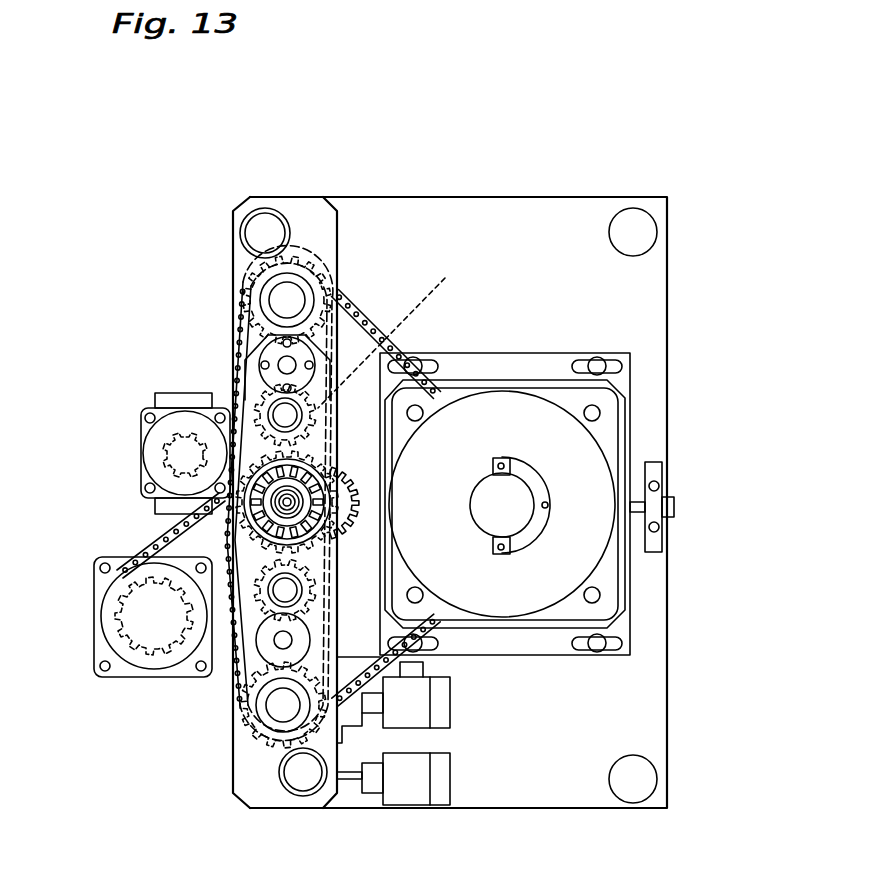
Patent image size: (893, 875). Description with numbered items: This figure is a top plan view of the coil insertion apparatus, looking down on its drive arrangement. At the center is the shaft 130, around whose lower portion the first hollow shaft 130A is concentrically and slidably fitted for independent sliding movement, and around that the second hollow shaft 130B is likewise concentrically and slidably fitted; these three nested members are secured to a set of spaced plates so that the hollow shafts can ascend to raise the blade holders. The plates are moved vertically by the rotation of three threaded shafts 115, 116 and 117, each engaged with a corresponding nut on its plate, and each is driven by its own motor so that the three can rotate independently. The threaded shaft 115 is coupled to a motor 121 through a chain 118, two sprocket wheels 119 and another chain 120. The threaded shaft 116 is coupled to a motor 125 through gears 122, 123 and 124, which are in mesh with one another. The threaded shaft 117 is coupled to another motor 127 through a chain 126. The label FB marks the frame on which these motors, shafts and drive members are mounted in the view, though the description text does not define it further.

The frame base FB is at (667, 145).
The threaded shaft 115 is at (283, 642).
The threaded shaft 116 is at (238, 352).
The threaded shaft 117 is at (280, 707).
The chain 118 is at (333, 603).
The sprocket wheels 119 is at (228, 392).
The chain 120 is at (172, 527).
The motor 121 is at (135, 593).
The gear 122 is at (357, 520).
The gear 123 is at (407, 334).
The gear 124 is at (165, 452).
The motor 125 is at (163, 432).
The chain 126 is at (366, 346).
The motor 127 is at (585, 456).
The shaft 130 is at (297, 512).
The first hollow shaft 130A is at (300, 501).
The second hollow shaft 130B is at (305, 487).